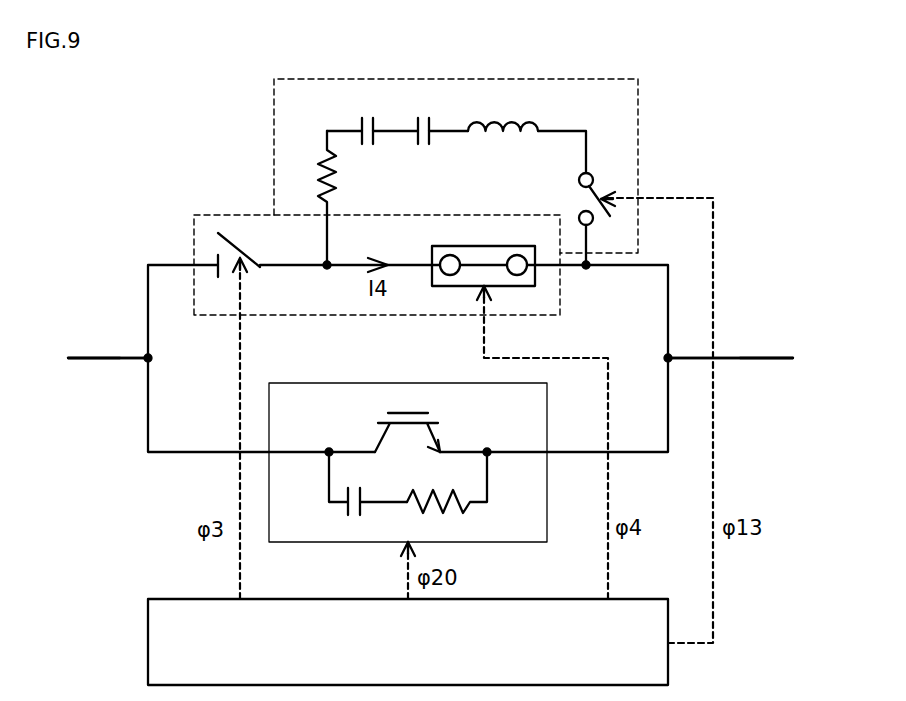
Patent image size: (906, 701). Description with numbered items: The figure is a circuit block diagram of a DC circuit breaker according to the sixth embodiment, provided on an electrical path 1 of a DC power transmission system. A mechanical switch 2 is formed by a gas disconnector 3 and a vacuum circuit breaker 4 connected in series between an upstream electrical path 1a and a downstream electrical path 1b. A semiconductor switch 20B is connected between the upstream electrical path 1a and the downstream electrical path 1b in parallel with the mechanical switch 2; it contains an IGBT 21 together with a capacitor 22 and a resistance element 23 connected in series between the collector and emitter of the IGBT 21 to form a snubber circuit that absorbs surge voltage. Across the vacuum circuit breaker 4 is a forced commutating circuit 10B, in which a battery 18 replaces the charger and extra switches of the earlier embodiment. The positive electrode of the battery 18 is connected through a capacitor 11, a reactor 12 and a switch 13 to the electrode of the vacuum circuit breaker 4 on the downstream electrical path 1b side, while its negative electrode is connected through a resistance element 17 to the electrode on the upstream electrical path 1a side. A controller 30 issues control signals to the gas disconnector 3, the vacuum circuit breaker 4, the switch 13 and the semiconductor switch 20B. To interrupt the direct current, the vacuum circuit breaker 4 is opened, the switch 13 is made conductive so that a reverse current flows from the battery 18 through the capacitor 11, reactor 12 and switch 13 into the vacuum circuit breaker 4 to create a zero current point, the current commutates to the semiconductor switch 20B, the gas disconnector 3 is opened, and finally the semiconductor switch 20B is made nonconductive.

The electrical path 1 is at (93, 344).
The upstream electrical path 1a is at (109, 364).
The downstream electrical path 1b is at (752, 364).
The mechanical switch 2 is at (210, 215).
The gas disconnector 3 is at (236, 244).
The vacuum circuit breaker 4 is at (488, 246).
The forced commutating circuit 10B is at (290, 78).
The capacitor 11 is at (430, 137).
The reactor 12 is at (533, 118).
The switch 13 is at (594, 188).
The resistance element 17 is at (332, 178).
The battery 18 is at (377, 122).
The semiconductor switch 20B is at (338, 383).
The IGBT 21 is at (410, 412).
The capacitor 22 is at (345, 506).
The resistance element 23 is at (456, 506).
The controller 30 is at (148, 645).